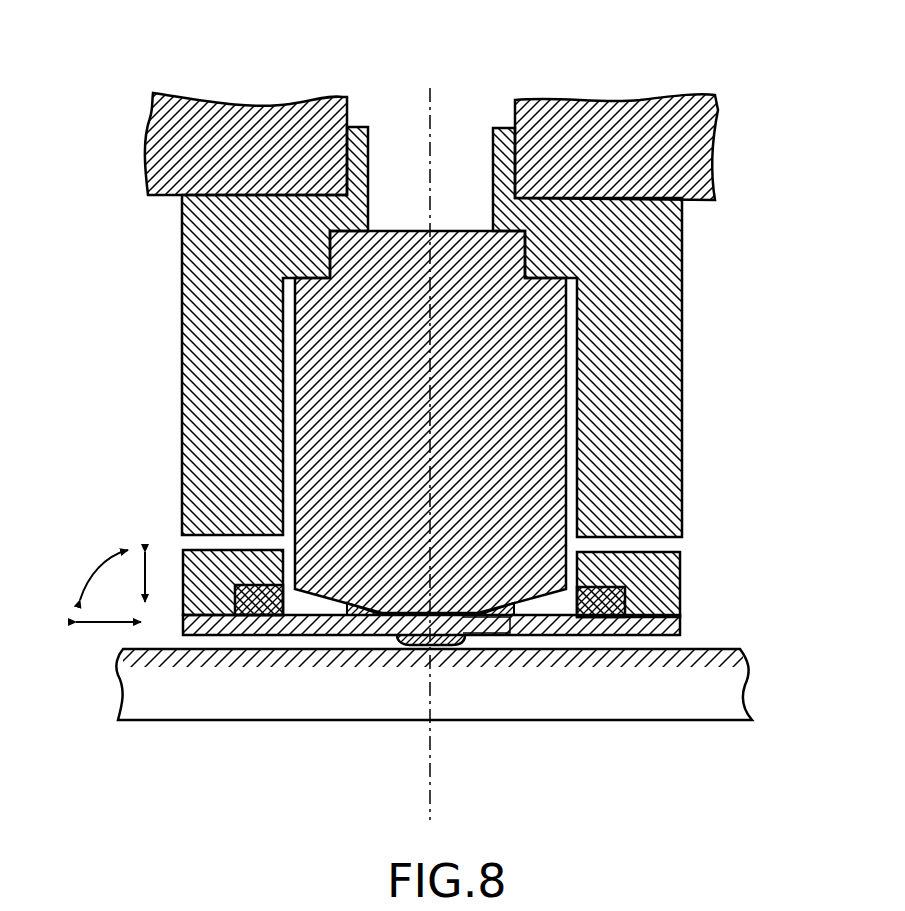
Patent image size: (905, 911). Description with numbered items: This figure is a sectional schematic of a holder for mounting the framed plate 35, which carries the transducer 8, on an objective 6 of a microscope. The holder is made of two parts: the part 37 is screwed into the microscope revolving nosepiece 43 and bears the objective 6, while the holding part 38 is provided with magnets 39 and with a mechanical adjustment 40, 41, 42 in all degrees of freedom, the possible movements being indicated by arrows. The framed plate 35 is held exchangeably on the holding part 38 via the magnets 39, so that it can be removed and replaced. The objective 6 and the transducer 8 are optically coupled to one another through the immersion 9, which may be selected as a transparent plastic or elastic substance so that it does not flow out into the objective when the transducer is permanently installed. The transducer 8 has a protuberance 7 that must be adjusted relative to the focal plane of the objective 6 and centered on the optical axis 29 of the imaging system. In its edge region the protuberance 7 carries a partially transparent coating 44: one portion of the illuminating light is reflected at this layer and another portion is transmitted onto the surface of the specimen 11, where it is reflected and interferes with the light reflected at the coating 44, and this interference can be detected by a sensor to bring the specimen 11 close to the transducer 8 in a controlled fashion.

The objective 6 is at (467, 233).
The protuberance 7 is at (470, 632).
The transducer 8 is at (502, 632).
The immersion 9 is at (400, 632).
The specimen 11 is at (717, 698).
The optical axis 29 is at (432, 130).
The framed plate 35 is at (672, 627).
The holder part 37 is at (655, 362).
The holding part 38 is at (680, 558).
The magnets 39 is at (612, 600).
The mechanical adjustment 40 is at (103, 623).
The mechanical adjustment 41 is at (90, 570).
The mechanical adjustment 42 is at (147, 572).
The microscope revolving nosepiece 43 is at (690, 147).
The partially transparent coating 44 is at (437, 647).